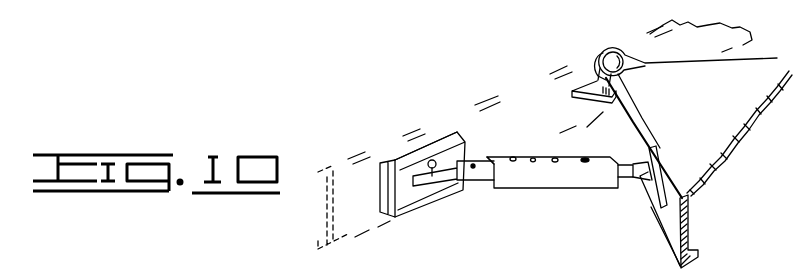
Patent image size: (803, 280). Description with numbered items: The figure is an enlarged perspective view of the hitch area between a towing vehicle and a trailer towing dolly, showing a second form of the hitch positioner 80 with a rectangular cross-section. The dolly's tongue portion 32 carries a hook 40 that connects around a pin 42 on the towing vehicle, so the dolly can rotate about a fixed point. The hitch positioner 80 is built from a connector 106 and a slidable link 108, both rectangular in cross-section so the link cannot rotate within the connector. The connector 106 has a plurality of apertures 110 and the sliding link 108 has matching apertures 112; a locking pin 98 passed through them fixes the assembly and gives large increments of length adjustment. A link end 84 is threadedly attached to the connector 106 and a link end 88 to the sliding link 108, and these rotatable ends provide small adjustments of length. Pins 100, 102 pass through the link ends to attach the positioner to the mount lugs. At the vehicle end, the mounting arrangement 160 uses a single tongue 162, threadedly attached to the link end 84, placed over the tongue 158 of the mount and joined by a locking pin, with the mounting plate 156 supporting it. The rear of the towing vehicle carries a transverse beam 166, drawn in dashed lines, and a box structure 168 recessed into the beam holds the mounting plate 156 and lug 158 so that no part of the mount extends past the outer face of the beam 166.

The tongue portion 32 is at (687, 67).
The hook 40 is at (598, 63).
The pin 42 is at (613, 50).
The hitch positioner 80 is at (547, 203).
The link end 84 is at (627, 186).
The link end 88 is at (423, 185).
The locking pin 98 is at (517, 157).
The pin 100 is at (435, 167).
The pin 102 is at (650, 128).
The connector 106 is at (542, 178).
The slidable link 108 is at (480, 186).
The apertures 110 is at (555, 157).
The apertures 112 is at (486, 157).
The mounting plate 156 is at (665, 172).
The tongue 158 is at (650, 207).
The mounting arrangement 160 is at (636, 203).
The single tongue 162 is at (633, 195).
The transverse beam 166 is at (363, 165).
The box structure 168 is at (380, 167).